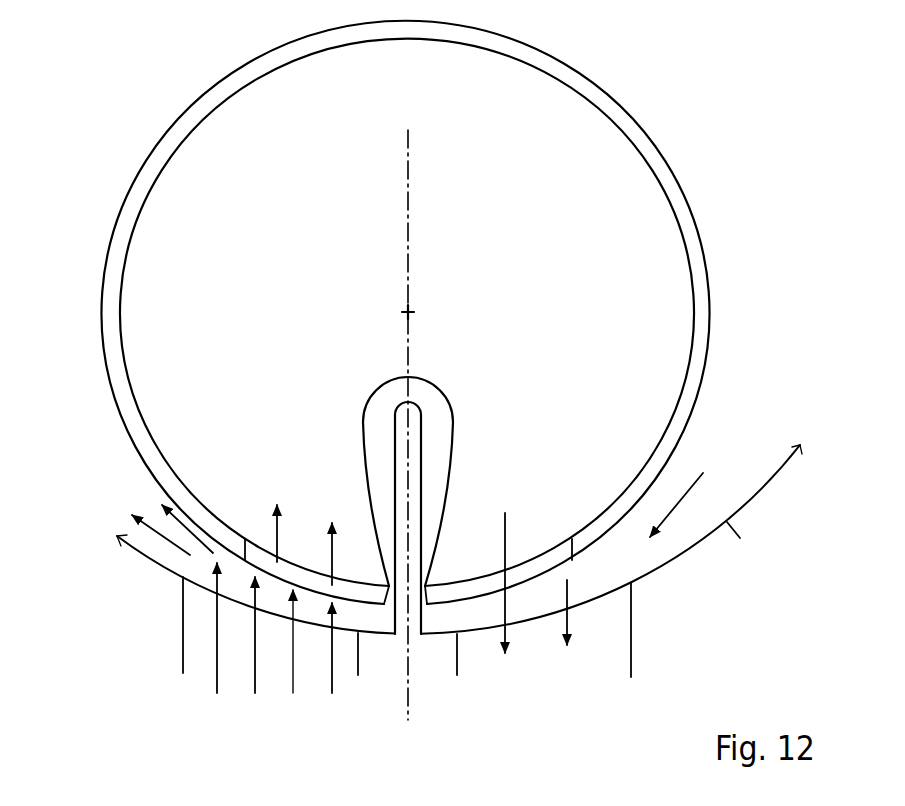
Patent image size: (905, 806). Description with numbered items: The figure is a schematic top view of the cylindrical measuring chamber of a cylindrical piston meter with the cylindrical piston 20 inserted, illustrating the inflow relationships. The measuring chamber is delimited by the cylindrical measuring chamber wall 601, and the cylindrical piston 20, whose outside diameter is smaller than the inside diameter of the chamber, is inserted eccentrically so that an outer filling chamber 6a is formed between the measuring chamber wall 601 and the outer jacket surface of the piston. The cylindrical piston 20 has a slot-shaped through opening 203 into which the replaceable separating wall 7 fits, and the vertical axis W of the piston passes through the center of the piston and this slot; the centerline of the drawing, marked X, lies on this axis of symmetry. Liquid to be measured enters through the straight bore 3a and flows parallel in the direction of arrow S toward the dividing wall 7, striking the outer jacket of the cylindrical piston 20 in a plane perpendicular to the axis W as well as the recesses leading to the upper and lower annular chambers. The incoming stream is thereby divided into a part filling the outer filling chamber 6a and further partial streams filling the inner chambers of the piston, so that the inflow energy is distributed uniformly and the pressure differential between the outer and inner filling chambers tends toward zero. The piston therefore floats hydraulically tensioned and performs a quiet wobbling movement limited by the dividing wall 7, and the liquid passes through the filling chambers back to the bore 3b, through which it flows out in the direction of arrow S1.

The cylindrical piston 20 is at (670, 160).
The through opening 203 is at (453, 423).
The separating wall 7 is at (420, 437).
The cylindrical measuring chamber wall 601 is at (459, 560).
The outer filling chamber 6a is at (130, 540).
The inflow direction arrow S is at (217, 652).
The outflow direction arrow S1 is at (567, 625).
The bore 3a is at (197, 613).
The bore 3b is at (620, 653).
The lengthwise axis of the piston W is at (420, 314).
The axis X is at (410, 710).